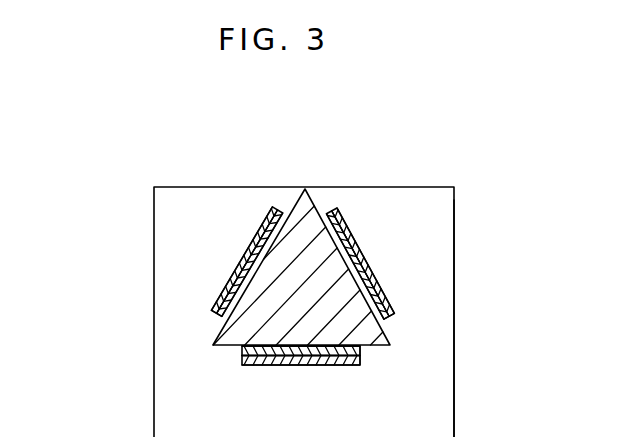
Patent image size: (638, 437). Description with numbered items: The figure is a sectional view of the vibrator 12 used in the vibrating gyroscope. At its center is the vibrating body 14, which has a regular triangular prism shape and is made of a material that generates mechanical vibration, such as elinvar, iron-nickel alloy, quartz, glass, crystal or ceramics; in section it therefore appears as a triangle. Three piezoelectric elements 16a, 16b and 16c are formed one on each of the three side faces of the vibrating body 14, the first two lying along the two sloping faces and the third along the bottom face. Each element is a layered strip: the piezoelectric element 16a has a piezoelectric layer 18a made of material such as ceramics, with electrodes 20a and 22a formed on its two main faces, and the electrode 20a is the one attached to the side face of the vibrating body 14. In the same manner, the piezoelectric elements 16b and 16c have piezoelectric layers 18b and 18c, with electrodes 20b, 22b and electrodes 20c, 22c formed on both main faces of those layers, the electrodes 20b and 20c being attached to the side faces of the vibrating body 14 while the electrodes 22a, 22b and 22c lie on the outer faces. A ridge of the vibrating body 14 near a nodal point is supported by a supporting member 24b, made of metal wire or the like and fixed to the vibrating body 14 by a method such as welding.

The vibrator 12 is at (82, 129).
The vibrating body 14 is at (237, 343).
The piezoelectric element 16a is at (256, 234).
The piezoelectric element 16b is at (347, 226).
The piezoelectric element 16c is at (357, 366).
The piezoelectric layer 18a is at (229, 290).
The piezoelectric layer 18b is at (366, 279).
The piezoelectric layer 18c is at (303, 362).
The electrode 20a is at (222, 316).
The electrode 20b is at (384, 321).
The electrode 20c is at (243, 348).
The electrode 22a is at (242, 257).
The electrode 22b is at (360, 248).
The electrode 22c is at (339, 362).
The supporting member 24b is at (456, 240).